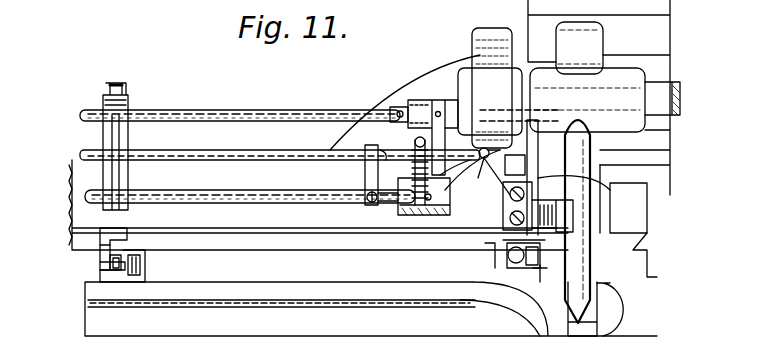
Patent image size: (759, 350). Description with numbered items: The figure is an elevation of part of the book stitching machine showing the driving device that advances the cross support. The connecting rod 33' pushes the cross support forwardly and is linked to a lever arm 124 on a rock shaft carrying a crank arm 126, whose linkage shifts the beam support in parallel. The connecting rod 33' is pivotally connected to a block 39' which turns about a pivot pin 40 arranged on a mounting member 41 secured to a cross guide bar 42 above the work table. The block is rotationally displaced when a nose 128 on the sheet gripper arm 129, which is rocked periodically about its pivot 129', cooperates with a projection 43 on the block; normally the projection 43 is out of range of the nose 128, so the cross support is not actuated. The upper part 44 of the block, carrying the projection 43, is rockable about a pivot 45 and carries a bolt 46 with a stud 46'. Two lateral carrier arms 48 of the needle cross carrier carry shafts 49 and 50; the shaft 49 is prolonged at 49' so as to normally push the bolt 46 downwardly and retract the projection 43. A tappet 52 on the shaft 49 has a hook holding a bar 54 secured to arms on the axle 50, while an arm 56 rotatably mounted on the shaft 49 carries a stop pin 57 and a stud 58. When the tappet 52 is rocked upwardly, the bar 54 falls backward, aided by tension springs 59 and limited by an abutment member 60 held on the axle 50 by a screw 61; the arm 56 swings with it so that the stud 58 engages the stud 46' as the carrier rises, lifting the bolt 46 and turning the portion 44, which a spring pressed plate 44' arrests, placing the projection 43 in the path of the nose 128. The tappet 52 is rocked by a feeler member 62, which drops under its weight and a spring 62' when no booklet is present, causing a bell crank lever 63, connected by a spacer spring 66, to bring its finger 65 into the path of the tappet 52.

The connecting rod 33' is at (541, 280).
The block 39' is at (499, 260).
The pivot pin 40 is at (480, 228).
The mounting member 41 is at (495, 268).
The cross guide bar 42 is at (197, 292).
The projection 43 is at (556, 140).
The upper part of the block 44 is at (525, 161).
The spring pressed plate 44' is at (597, 221).
The pivot 45 is at (503, 196).
The bolt 46 is at (494, 159).
The stud 46' is at (405, 92).
The carrier arm 48 is at (455, 100).
The shaft 49 is at (240, 104).
The prolongation of shaft 49 49' is at (520, 98).
The shaft 50 is at (236, 185).
The tappet 52 is at (127, 180).
The bar 54 is at (186, 150).
The arm 56 is at (427, 128).
The stop pin 57 is at (386, 152).
The stud 58 is at (473, 168).
The tension spring 59 is at (416, 168).
The abutment member 60 is at (365, 172).
The screw 61 is at (367, 199).
The feeler member 62 is at (100, 272).
The spring 62' is at (82, 284).
The bell crank lever 63 is at (101, 250).
The finger 65 is at (115, 230).
The spacer spring 66 is at (102, 265).
The lever arm 124 is at (532, 343).
The crank arm 126 is at (472, 343).
The nose 128 is at (548, 128).
The sheet gripper arm 129 is at (490, 77).
The pivot 129' is at (688, 98).